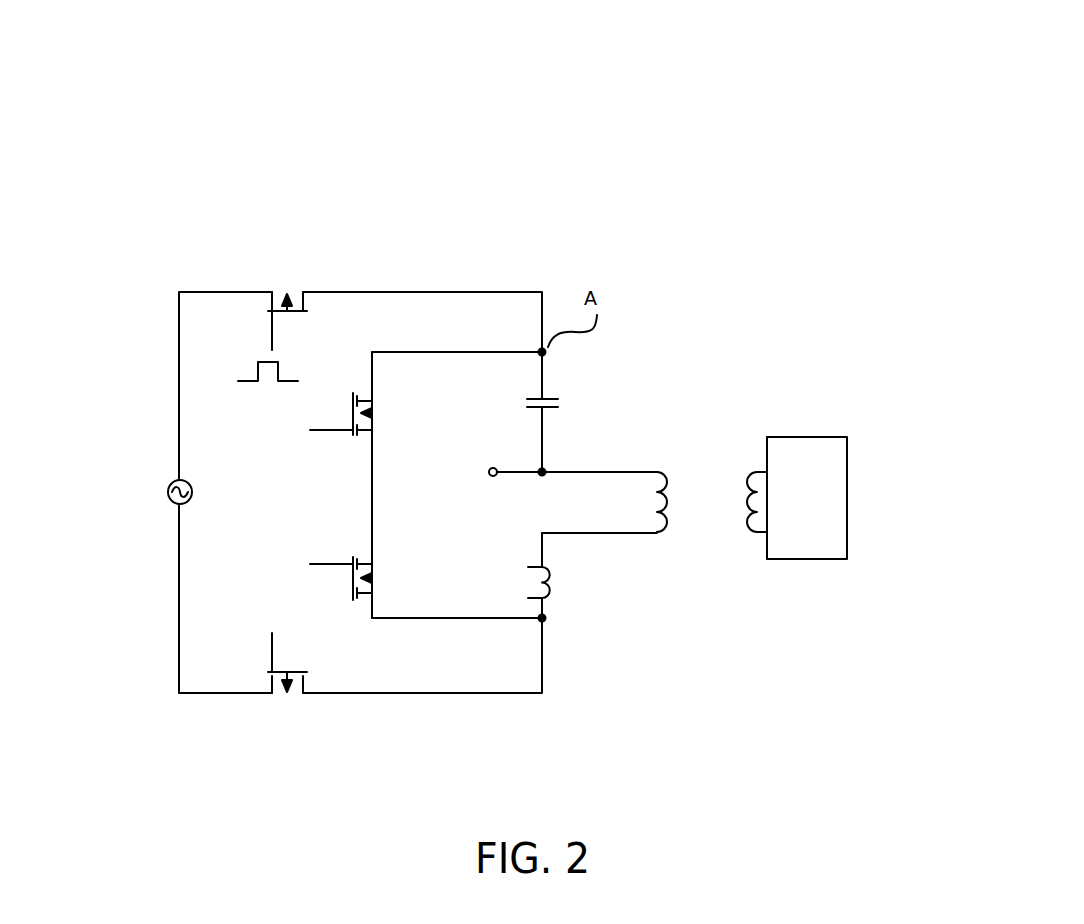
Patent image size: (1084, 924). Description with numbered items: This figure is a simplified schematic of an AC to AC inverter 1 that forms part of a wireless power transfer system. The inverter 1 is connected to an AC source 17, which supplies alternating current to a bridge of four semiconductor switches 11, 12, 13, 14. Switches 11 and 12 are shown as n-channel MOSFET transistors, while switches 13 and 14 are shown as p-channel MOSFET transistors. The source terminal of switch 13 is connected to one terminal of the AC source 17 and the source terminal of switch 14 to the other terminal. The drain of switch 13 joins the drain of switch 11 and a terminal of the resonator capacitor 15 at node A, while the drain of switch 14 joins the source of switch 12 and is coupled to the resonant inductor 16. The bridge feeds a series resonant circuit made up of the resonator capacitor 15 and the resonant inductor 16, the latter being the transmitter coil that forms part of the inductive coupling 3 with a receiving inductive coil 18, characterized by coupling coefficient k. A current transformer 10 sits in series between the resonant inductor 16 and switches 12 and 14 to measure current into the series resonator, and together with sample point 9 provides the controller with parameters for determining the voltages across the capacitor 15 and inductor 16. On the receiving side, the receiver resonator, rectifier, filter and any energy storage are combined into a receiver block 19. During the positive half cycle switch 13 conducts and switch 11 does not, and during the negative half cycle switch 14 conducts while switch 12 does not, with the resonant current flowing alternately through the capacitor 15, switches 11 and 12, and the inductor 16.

The inverter 1 is at (475, 90).
The inductive coupling 3 is at (703, 432).
The sample point 9 is at (493, 460).
The current transformer 10 is at (557, 602).
The switch 11 is at (353, 385).
The switch 12 is at (343, 580).
The switch 13 is at (263, 305).
The switch 14 is at (313, 680).
The resonator capacitor 15 is at (557, 387).
The resonant inductor 16 is at (663, 465).
The AC source 17 is at (168, 510).
The receiving inductive coil 18 is at (755, 465).
The receiver block 19 is at (820, 500).